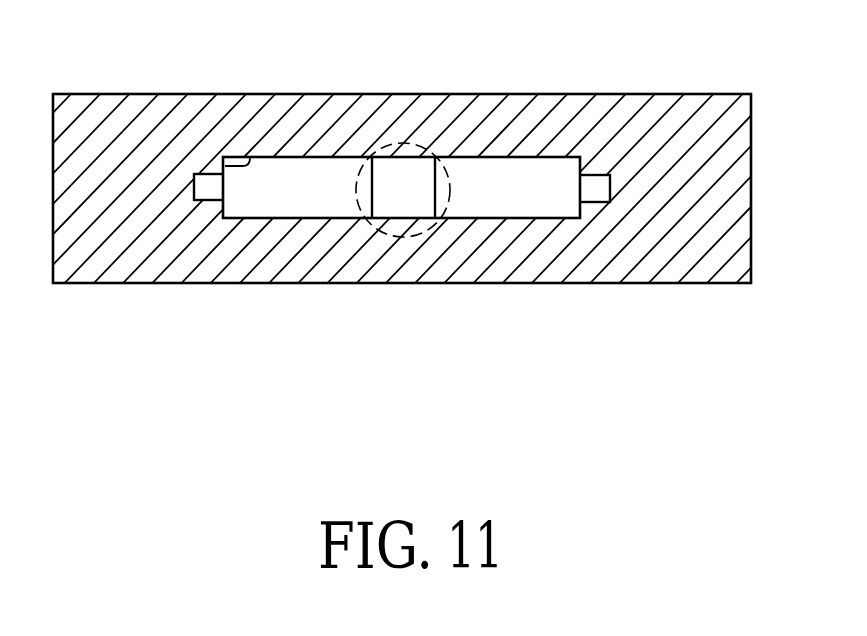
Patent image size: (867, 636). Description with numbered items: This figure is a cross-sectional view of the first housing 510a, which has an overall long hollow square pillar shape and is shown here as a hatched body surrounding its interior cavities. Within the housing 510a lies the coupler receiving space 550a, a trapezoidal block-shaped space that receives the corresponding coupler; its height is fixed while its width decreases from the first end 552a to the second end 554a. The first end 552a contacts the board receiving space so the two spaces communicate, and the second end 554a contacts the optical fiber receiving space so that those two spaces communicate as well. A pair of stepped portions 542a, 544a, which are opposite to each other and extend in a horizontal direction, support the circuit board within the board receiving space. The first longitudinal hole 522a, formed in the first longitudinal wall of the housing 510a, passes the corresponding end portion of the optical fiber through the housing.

The first housing 510a is at (557, 253).
The first longitudinal hole 522a is at (398, 235).
The stepped portion 542a is at (210, 176).
The stepped portion 544a is at (593, 177).
The coupler receiving space 550a is at (502, 180).
The first end 552a is at (250, 164).
The second end 554a is at (362, 214).